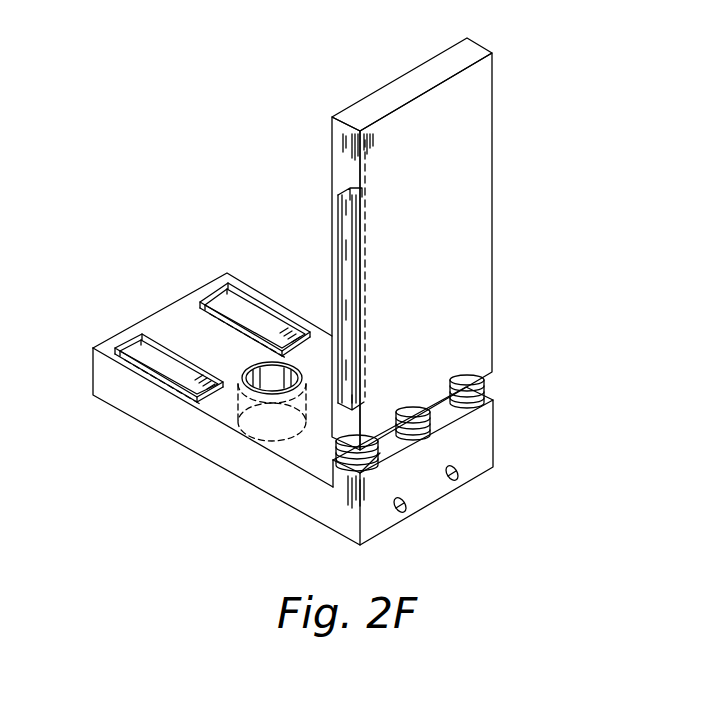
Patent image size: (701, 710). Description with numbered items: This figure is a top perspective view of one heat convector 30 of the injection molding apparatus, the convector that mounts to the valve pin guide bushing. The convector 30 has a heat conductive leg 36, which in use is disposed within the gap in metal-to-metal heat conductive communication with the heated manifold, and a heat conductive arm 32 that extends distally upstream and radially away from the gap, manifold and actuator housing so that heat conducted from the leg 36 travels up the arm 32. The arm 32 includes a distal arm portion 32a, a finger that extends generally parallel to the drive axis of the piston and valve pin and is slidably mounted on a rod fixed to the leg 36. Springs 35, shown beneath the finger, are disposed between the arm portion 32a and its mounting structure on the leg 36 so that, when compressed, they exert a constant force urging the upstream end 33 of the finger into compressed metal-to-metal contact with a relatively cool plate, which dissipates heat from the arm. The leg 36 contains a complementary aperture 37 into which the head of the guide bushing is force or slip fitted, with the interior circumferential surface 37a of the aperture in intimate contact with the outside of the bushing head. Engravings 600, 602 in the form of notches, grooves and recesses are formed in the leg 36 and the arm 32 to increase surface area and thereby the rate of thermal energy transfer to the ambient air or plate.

The heat convector 30 is at (226, 148).
The heat conductive arm 32 is at (497, 155).
The arm portion 32a is at (332, 162).
The upstream end 33 is at (408, 78).
The spring 35 is at (378, 455).
The heat conductive leg 36 is at (93, 383).
The aperture 37 is at (265, 360).
The interior circumferential surface 37a is at (265, 382).
The engravings 600 is at (210, 302).
The engravings 602 is at (342, 207).